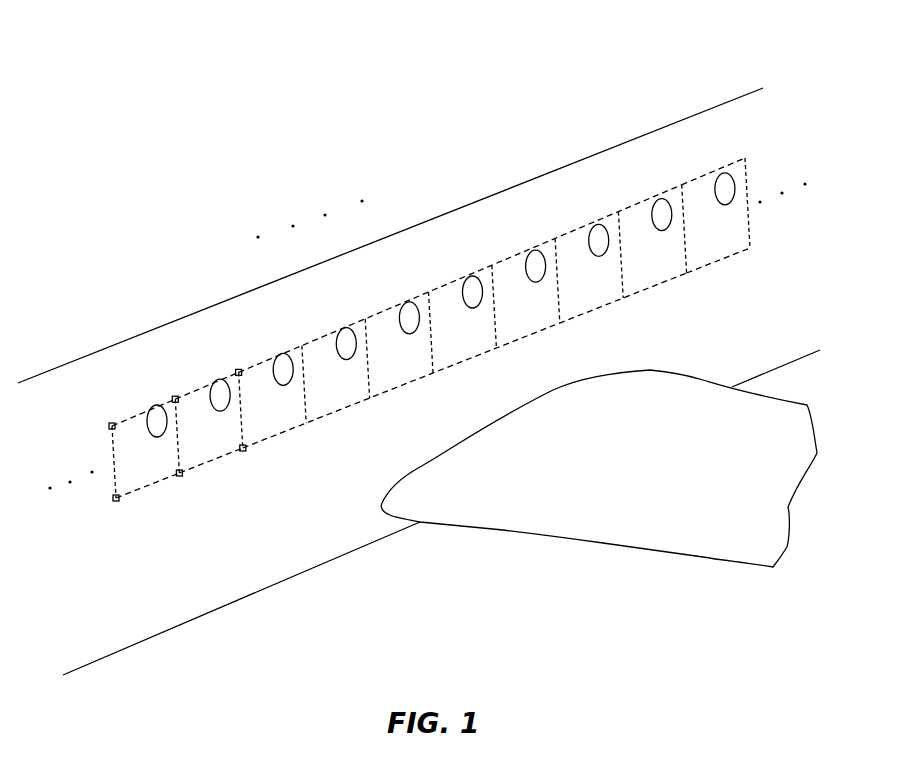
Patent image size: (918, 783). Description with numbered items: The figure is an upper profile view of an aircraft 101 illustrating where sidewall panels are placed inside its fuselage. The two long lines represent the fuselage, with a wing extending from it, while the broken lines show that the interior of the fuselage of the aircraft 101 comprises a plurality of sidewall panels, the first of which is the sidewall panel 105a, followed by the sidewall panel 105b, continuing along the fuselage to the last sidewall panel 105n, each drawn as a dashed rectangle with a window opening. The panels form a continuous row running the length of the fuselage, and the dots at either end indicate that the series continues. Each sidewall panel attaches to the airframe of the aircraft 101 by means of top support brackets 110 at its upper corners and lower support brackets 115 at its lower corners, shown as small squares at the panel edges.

The aircraft 101 is at (360, 122).
The sidewall panel 105a is at (145, 402).
The sidewall panel 105b is at (218, 372).
The sidewall panel 105n is at (713, 172).
The top support bracket 110 is at (109, 424).
The lower support bracket 115 is at (116, 502).